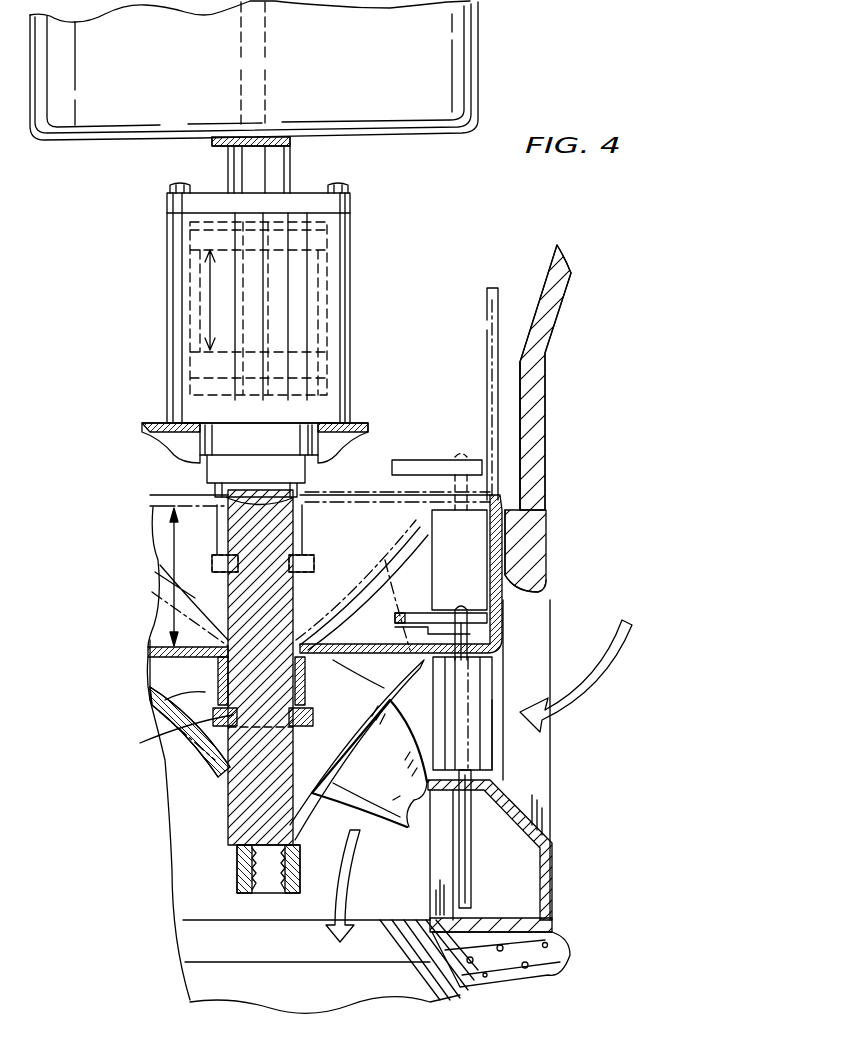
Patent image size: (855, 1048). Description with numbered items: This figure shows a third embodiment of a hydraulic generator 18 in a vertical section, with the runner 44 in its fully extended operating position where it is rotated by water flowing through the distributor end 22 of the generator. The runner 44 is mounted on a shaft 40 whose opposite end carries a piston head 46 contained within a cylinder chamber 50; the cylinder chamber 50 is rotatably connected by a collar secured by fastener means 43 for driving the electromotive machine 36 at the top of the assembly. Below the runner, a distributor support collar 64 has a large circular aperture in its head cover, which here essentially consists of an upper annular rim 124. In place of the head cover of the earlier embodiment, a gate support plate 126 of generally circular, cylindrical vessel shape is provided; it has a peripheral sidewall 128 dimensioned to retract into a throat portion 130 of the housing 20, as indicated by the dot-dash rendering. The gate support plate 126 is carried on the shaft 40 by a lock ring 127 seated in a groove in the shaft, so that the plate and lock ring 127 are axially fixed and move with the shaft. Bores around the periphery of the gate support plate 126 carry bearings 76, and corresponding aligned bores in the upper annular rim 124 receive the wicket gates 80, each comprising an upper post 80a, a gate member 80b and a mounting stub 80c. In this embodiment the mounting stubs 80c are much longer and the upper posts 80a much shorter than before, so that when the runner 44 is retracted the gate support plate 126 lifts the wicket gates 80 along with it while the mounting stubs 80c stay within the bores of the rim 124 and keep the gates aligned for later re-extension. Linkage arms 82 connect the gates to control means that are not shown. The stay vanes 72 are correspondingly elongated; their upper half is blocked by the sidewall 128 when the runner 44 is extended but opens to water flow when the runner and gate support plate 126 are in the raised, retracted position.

The electromotive machine 36 is at (435, 46).
The fastener means 43 is at (183, 188).
The cylinder chamber 50 is at (320, 294).
The piston head 46 is at (320, 354).
The hydraulic generator 18 is at (216, 296).
The gate support plate 126 is at (360, 458).
The shaft 40 is at (275, 598).
The runner 44 is at (255, 818).
The lock ring 127 is at (160, 713).
The distributor end 22 is at (152, 698).
The upper annular rim 124 is at (432, 828).
The linkage arms 82 is at (415, 612).
The upper posts 80a is at (405, 630).
The bearings 76 is at (470, 625).
The wicket gates 80 is at (470, 704).
The gate members 80b is at (492, 745).
The mounting stubs 80c is at (472, 862).
The housing 20 is at (543, 340).
The throat portion 130 is at (508, 397).
The peripheral sidewall 128 is at (487, 372).
The stay vanes 72 is at (525, 597).
The distributor support collar 64 is at (550, 897).